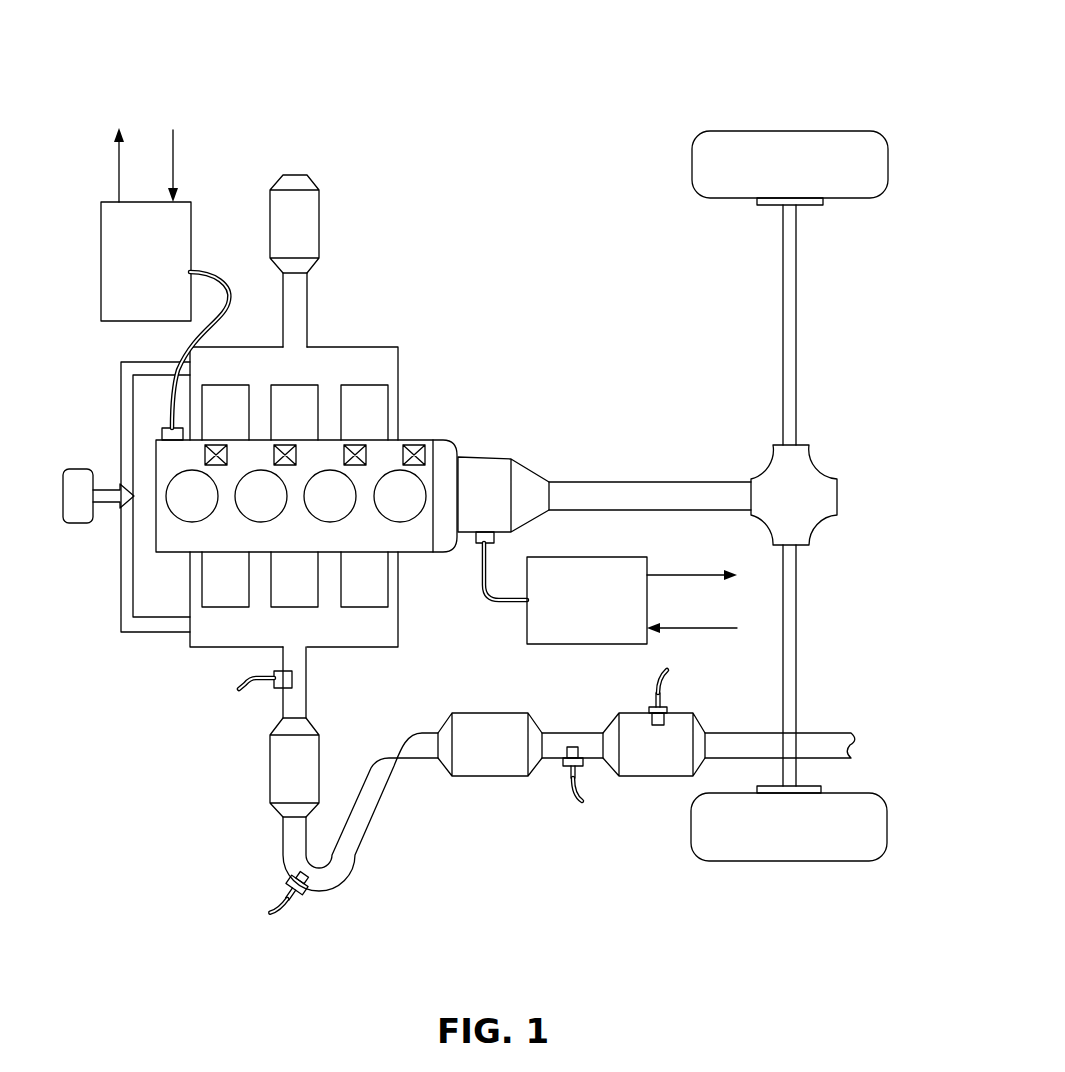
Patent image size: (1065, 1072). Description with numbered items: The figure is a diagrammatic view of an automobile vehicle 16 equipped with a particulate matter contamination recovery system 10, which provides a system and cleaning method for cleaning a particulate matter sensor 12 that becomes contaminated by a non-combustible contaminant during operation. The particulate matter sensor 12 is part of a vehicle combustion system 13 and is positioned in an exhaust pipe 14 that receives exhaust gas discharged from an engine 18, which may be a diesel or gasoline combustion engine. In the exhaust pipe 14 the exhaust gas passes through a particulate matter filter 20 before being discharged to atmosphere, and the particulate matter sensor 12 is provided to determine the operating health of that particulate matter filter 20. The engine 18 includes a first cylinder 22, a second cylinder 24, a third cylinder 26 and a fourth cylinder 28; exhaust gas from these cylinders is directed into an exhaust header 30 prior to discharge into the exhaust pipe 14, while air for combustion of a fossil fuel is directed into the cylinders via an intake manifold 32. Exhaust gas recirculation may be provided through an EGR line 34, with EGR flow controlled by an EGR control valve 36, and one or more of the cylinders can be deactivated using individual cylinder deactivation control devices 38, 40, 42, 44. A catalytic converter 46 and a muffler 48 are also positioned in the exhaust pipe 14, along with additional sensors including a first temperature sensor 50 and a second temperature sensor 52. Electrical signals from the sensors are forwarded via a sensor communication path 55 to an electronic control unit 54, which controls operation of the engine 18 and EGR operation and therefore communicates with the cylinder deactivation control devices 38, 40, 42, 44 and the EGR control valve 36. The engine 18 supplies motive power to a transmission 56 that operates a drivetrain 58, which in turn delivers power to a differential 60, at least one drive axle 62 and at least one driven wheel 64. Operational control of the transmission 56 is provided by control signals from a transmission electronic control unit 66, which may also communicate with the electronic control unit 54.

The particulate matter contamination recovery system 10 is at (607, 75).
The particulate matter sensor 12 is at (312, 888).
The vehicle combustion system 13 is at (458, 410).
The exhaust pipe 14 is at (818, 732).
The automobile vehicle 16 is at (470, 143).
The engine 18 is at (158, 545).
The particulate matter filter 20 is at (270, 787).
The first cylinder 22 is at (200, 513).
The second cylinder 24 is at (268, 513).
The third cylinder 26 is at (338, 513).
The fourth cylinder 28 is at (408, 513).
The exhaust header 30 is at (367, 647).
The intake manifold 32 is at (392, 347).
The EGR line 34 is at (128, 370).
The EGR control valve 36 is at (76, 470).
The cylinder deactivation control device 38 is at (215, 444).
The cylinder deactivation control device 40 is at (284, 444).
The cylinder deactivation control device 42 is at (354, 444).
The cylinder deactivation control device 44 is at (413, 444).
The catalytic converter 46 is at (480, 772).
The muffler 48 is at (650, 772).
The first temperature sensor 50 is at (283, 708).
The second temperature sensor 52 is at (563, 752).
The electronic control unit (ECU) 54 is at (102, 235).
The sensor communication path 55 is at (227, 292).
The transmission 56 is at (503, 460).
The drivetrain 58 is at (625, 482).
The differential 60 is at (830, 493).
The drive axle 62 is at (795, 325).
The driven wheel 64 is at (800, 130).
The transmission electronic control unit (TECU) 66 is at (577, 645).